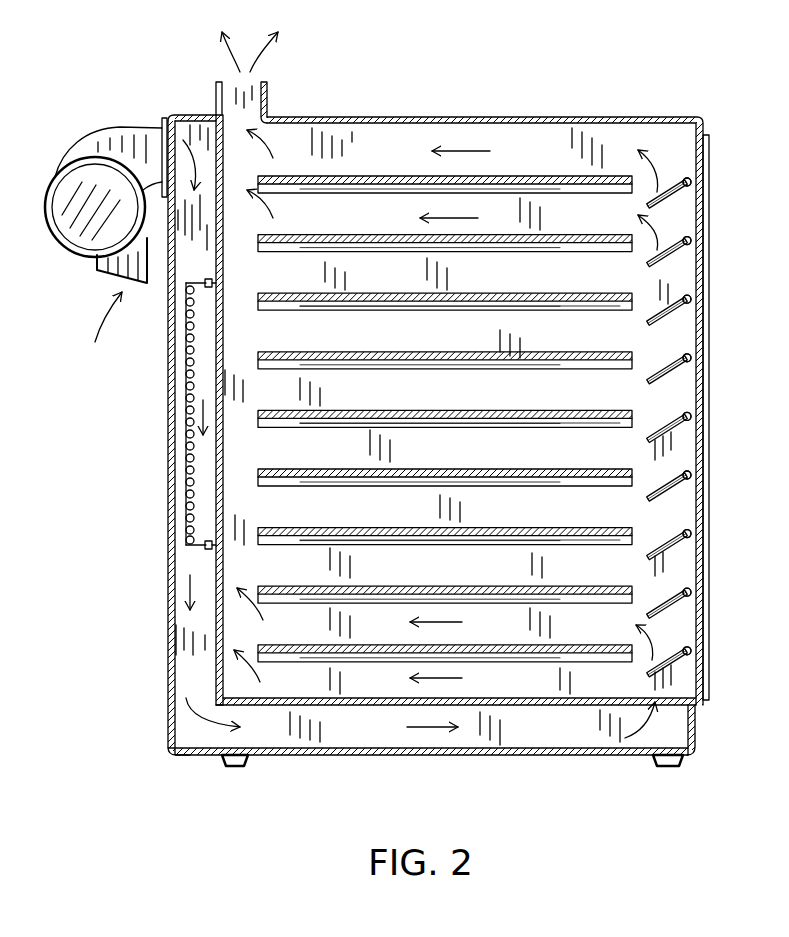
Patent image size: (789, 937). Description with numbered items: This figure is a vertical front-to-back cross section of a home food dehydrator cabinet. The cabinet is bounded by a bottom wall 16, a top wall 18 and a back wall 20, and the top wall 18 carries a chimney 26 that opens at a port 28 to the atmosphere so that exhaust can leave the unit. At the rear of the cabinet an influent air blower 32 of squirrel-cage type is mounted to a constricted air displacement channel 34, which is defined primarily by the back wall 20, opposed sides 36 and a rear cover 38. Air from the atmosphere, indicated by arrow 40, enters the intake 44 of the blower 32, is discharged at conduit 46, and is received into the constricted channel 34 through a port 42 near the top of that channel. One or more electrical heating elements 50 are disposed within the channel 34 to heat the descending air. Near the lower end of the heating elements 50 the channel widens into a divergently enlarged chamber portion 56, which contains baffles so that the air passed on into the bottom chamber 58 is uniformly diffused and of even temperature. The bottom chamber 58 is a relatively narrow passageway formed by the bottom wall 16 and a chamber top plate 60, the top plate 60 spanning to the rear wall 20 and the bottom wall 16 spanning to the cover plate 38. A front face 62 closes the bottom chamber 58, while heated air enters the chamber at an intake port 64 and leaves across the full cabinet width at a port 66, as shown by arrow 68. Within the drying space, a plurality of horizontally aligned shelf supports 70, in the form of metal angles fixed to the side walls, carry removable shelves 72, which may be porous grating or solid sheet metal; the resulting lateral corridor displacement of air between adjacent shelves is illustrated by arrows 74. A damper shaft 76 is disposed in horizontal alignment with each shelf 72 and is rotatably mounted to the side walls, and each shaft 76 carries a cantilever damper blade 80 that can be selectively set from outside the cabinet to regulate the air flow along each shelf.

The bottom wall 16 is at (445, 757).
The top wall 18 is at (470, 117).
The back wall 20 is at (226, 268).
The chimney 26 is at (268, 97).
The port 28 is at (258, 78).
The influent air blower 32 is at (85, 183).
The constricted air displacement channel 34 is at (165, 312).
The opposed sides 36 is at (216, 166).
The rear cover 38 is at (168, 455).
The arrow 40 is at (100, 345).
The port 42 is at (175, 125).
The intake 44 is at (120, 285).
The conduit 46 is at (130, 130).
The electrical heating element 50 is at (186, 500).
The divergently enlarged chamber portion 56 is at (178, 590).
The bottom chamber 58 is at (548, 742).
The chamber top plate 60 is at (478, 698).
The front face 62 is at (700, 722).
The intake port 64 is at (185, 727).
The port 66 is at (668, 702).
The arrow 68 is at (660, 758).
The shelf support 70 is at (632, 193).
The removable shelf 72 is at (528, 312).
The arrows 74 is at (455, 150).
The damper shaft 76 is at (668, 194).
The cantilever damper blade 80 is at (688, 180).